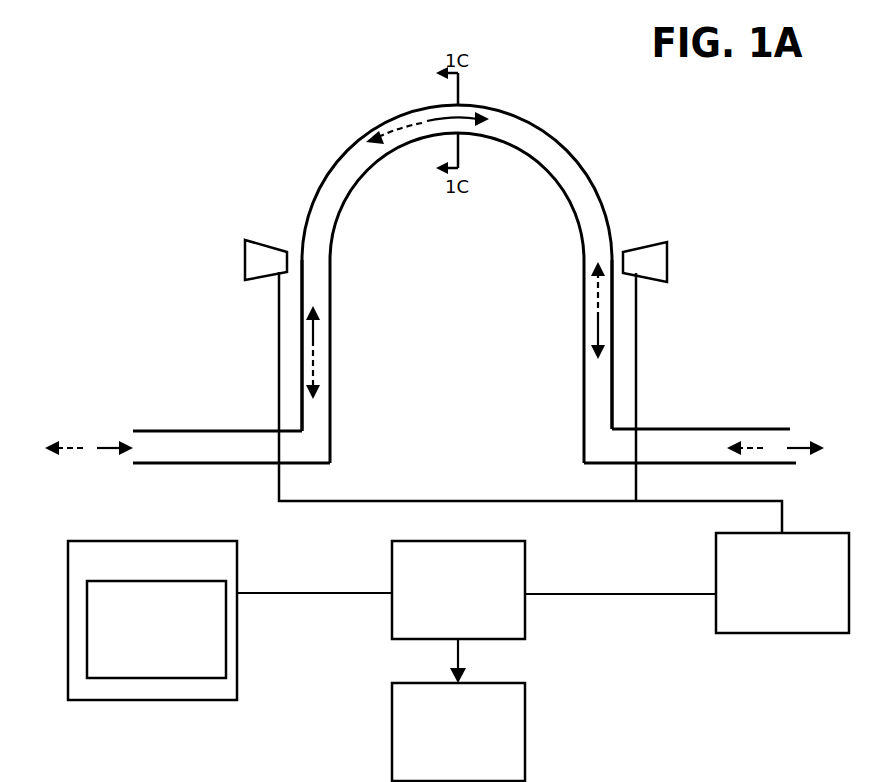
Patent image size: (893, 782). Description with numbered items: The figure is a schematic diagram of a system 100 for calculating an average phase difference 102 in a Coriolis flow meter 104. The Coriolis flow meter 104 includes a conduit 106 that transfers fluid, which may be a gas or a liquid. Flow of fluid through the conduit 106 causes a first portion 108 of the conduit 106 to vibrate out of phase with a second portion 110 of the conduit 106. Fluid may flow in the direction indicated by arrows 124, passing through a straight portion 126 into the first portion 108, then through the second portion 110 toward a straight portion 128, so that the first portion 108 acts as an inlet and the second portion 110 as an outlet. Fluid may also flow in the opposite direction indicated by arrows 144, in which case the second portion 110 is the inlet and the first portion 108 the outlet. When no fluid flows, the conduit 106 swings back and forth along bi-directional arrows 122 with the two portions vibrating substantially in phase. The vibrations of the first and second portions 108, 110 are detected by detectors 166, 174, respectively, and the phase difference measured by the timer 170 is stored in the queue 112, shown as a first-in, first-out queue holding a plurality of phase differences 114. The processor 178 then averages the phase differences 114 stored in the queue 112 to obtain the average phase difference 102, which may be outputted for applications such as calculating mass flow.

The system 100 is at (178, 111).
The average phase difference 102 is at (525, 722).
The Coriolis flow meter 104 is at (218, 430).
The conduit 106 is at (605, 200).
The first portion of the conduit 108 is at (300, 237).
The second portion of the conduit 110 is at (611, 240).
The queue 112 is at (237, 557).
The phase differences 114 is at (227, 652).
The bi-directional arrows 122 is at (649, 775).
The arrows 124 is at (462, 110).
The straight portion 126 is at (197, 452).
The straight portion 128 is at (658, 438).
The arrows 144 is at (390, 128).
The detector 166 is at (248, 257).
The timer 170 is at (747, 633).
The detector 174 is at (665, 256).
The processor 178 is at (525, 555).